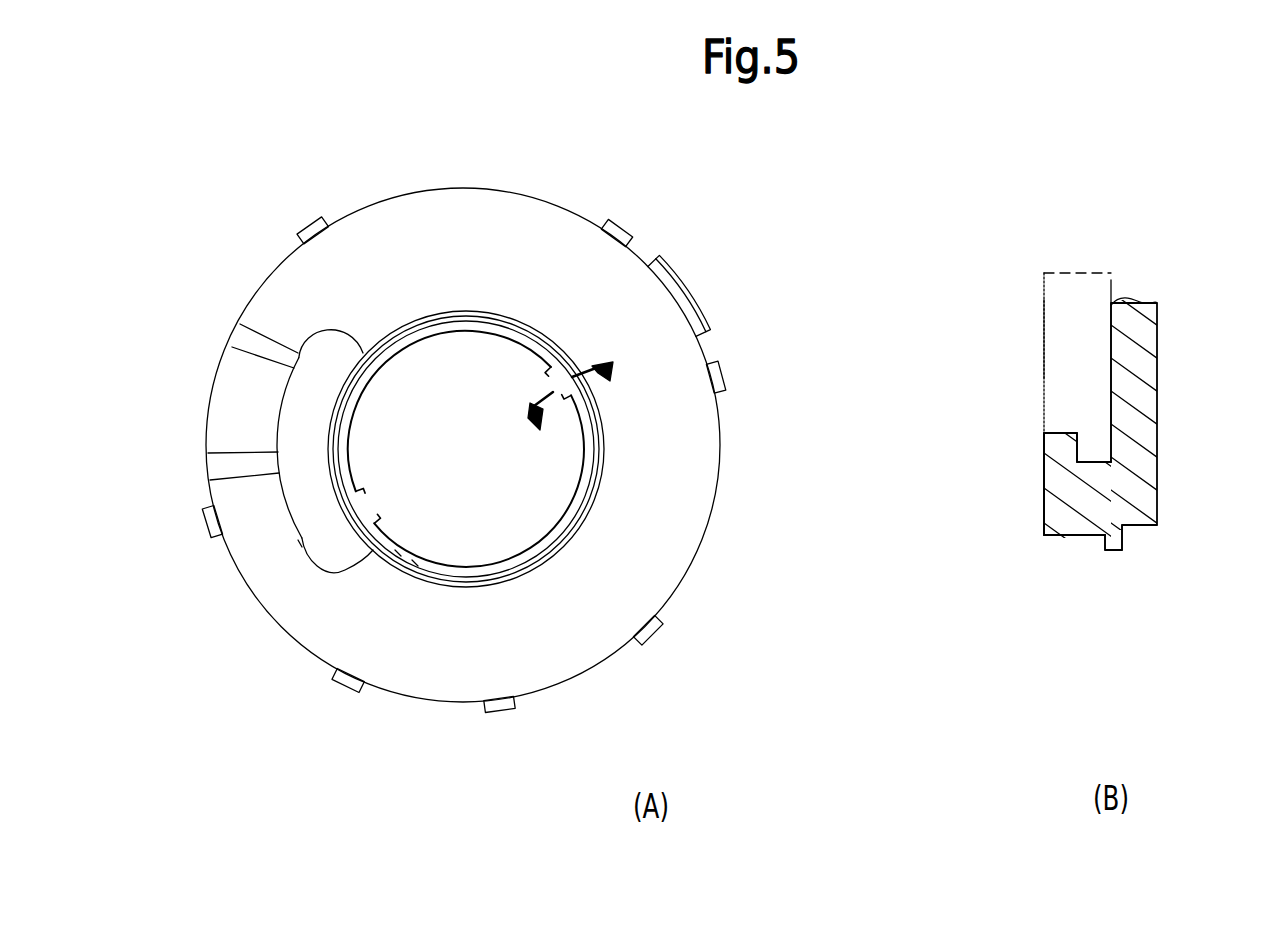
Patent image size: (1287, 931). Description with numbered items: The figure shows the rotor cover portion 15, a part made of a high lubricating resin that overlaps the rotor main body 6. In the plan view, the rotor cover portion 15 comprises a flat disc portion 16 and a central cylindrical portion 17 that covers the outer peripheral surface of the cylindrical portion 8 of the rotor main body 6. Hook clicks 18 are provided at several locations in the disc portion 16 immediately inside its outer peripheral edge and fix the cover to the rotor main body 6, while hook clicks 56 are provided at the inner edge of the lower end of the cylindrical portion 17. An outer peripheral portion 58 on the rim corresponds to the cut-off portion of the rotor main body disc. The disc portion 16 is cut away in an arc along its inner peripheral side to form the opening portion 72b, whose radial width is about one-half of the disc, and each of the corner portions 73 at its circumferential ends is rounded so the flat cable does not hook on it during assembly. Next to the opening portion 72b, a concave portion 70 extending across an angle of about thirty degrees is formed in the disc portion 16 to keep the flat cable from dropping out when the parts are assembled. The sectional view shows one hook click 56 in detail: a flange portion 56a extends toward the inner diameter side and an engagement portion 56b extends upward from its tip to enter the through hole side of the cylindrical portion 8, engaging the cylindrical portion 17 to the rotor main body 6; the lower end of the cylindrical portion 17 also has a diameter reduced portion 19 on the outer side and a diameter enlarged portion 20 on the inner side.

In FIG. 5A, the rotor cover portion 15 is at (566, 188).
In FIG. 5A, the disc portion 16 is at (458, 215).
In FIG. 5A, the cylindrical portion 17 is at (604, 487).
In FIG. 5B, the cylindrical portion 17 is at (1160, 375).
In FIG. 5A, the hook clicks 18 is at (310, 226).
In FIG. 5A, the diameter reduced portion 19 is at (398, 553).
In FIG. 5B, the diameter reduced portion 19 is at (1127, 540).
In FIG. 5A, the diameter enlarged portion 20 is at (416, 562).
In FIG. 5B, the diameter enlarged portion 20 is at (1104, 540).
In FIG. 5A, the hook click 56 is at (547, 380).
In FIG. 5B, the hook click 56 is at (1053, 538).
In FIG. 5B, the flange portion 56a is at (1090, 490).
In FIG. 5B, the engagement portion 56b is at (1044, 482).
In FIG. 5A, the outer peripheral portion 58 is at (700, 290).
In FIG. 5A, the concave portion 70 is at (228, 400).
In FIG. 5A, the opening portion 72b is at (297, 543).
In FIG. 5A, the corner portions 73 is at (330, 336).
In FIG. 5B, the rotor main body 6 is at (1044, 322).
In FIG. 5B, the cylindrical portion 8 is at (1043, 378).